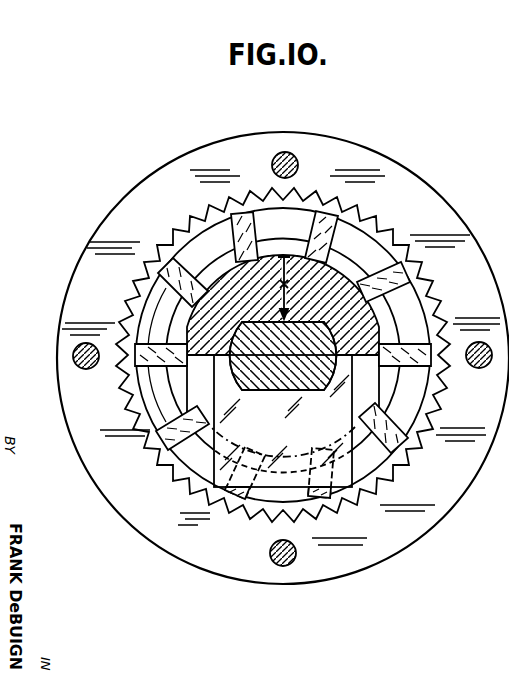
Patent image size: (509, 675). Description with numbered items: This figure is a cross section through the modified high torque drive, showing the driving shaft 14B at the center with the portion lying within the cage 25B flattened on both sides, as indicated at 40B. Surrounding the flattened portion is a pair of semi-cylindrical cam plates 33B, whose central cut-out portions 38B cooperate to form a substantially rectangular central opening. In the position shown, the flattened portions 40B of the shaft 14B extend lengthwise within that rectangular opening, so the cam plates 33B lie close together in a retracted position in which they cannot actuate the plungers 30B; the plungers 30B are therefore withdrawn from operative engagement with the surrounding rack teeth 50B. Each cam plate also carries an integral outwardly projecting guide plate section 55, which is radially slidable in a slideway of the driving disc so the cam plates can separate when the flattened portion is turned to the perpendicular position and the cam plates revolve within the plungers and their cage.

The plungers 30B is at (262, 207).
The rack teeth 50B is at (327, 200).
The cage 25B is at (160, 313).
The central cut-out portions 38B is at (237, 320).
The driving shaft 14B is at (308, 372).
The semi-cylindrical cam plates 33B is at (333, 272).
The guide plate section 55 is at (352, 488).
The flattened portion 40B is at (280, 393).